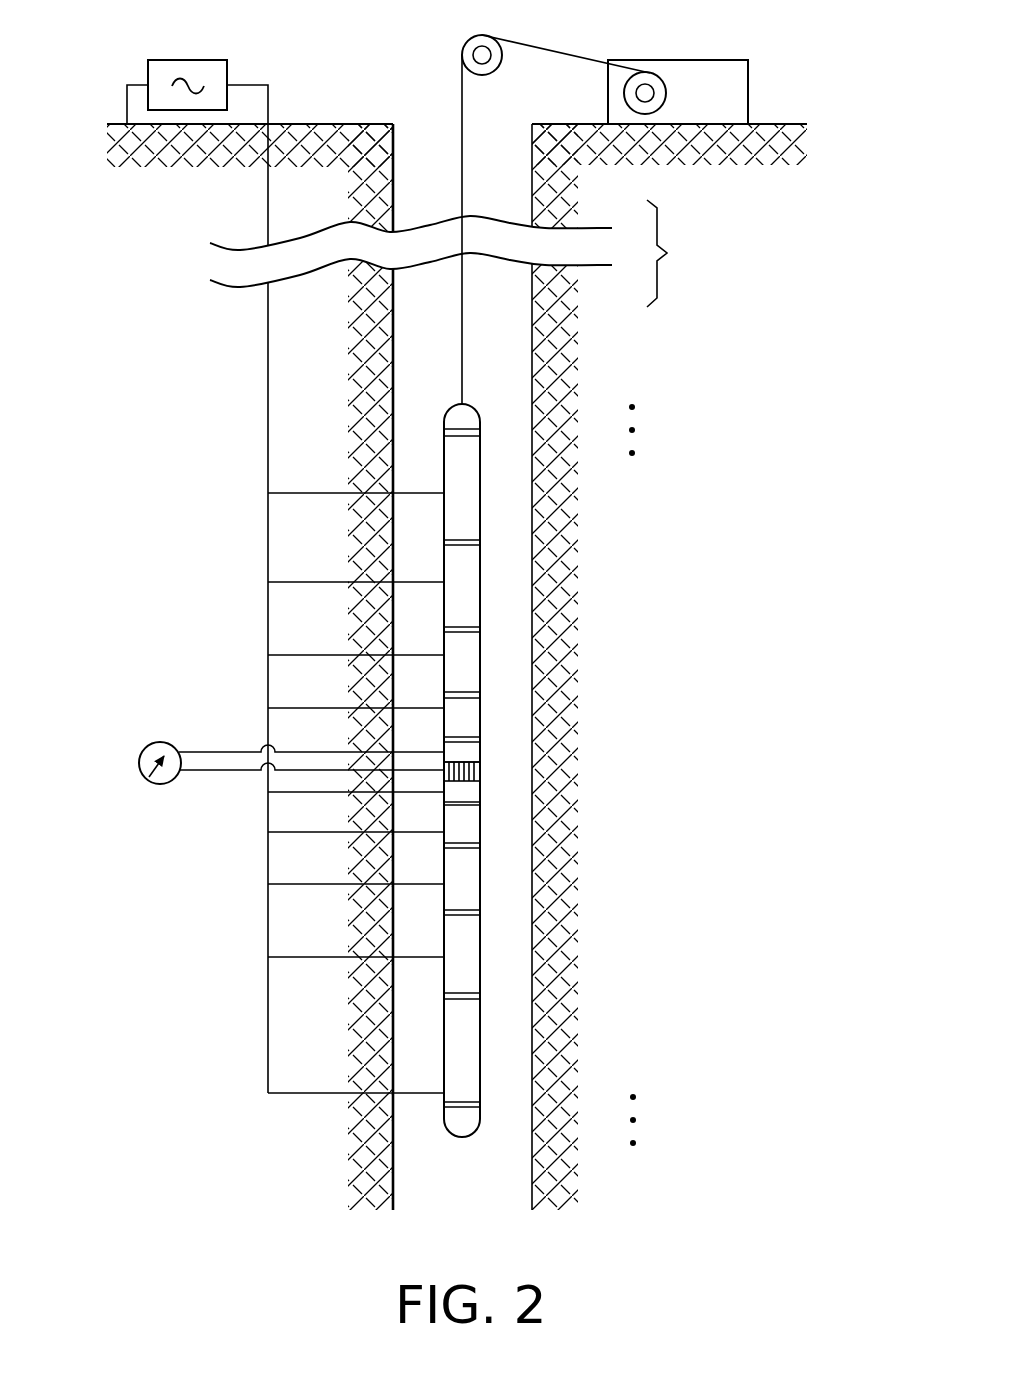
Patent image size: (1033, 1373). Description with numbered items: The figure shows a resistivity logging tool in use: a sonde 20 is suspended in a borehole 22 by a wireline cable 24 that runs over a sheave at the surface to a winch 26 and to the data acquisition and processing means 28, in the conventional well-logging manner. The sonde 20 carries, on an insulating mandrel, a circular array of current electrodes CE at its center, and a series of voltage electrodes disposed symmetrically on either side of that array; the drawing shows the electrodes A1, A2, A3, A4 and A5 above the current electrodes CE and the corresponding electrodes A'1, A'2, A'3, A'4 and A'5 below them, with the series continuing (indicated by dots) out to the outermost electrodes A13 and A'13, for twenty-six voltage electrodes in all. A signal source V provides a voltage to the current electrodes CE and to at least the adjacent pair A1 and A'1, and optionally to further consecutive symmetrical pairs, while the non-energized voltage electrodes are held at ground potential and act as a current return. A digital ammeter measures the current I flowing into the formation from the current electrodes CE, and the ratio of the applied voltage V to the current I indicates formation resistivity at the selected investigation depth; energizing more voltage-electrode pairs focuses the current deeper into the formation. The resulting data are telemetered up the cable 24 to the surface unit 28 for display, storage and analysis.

The sonde 20 is at (476, 401).
The borehole 22 is at (477, 1195).
The wireline cable 24 is at (461, 103).
The winch 26 is at (492, 34).
The data acquisition and processing means 28 is at (748, 86).
The signal source V is at (285, 555).
The current I is at (291, 743).
The current electrodes CE is at (486, 770).
The voltage electrode A1 is at (470, 752).
The voltage electrode A2 is at (470, 712).
The voltage electrode A3 is at (470, 657).
The voltage electrode A4 is at (470, 587).
The voltage electrode A5 is at (470, 515).
The voltage electrode A13 is at (627, 402).
The voltage electrode A'1 is at (550, 807).
The voltage electrode A'2 is at (550, 842).
The voltage electrode A'3 is at (550, 890).
The voltage electrode A'4 is at (550, 958).
The voltage electrode A'5 is at (550, 1050).
The voltage electrode A'13 is at (633, 1152).